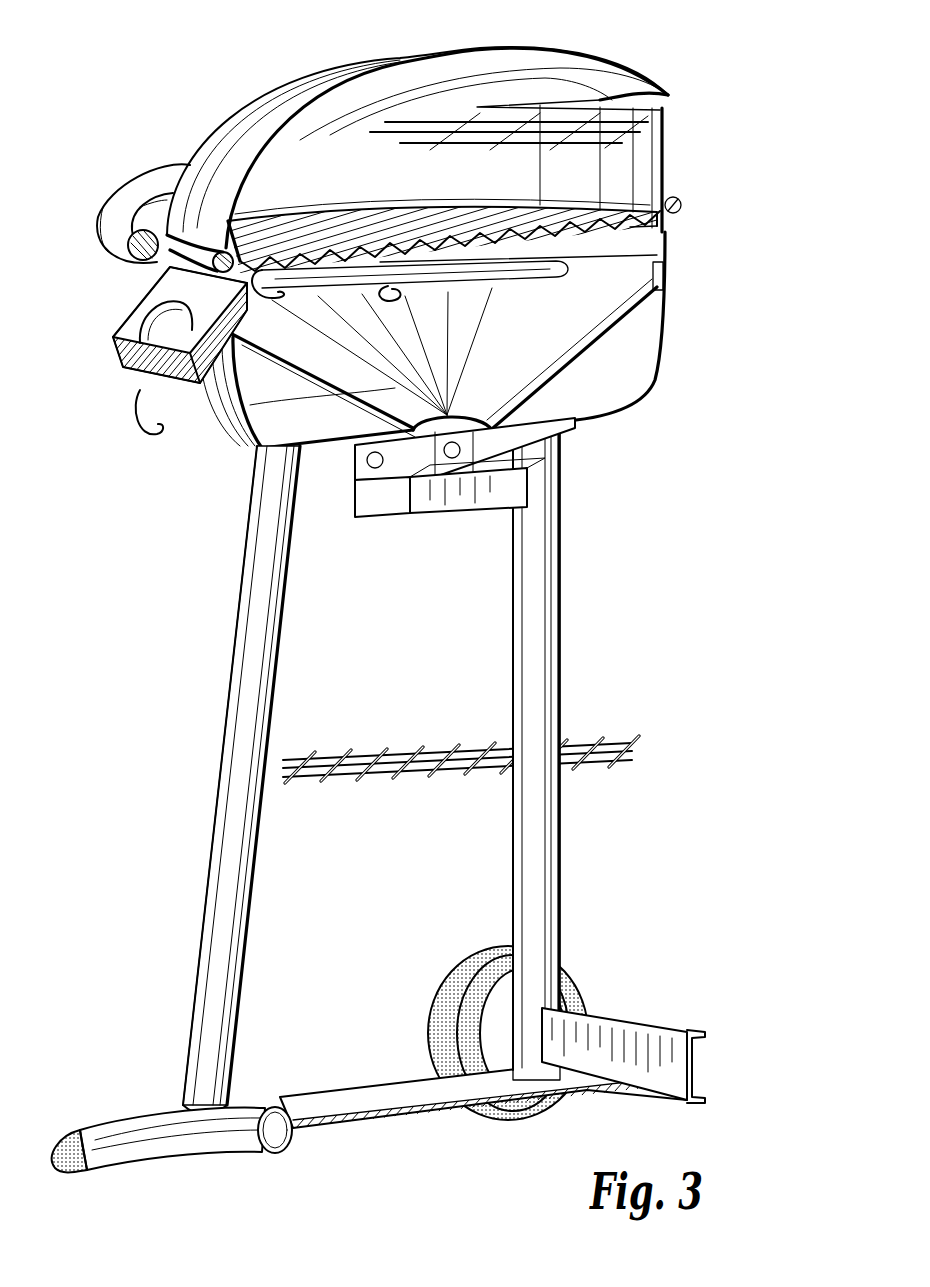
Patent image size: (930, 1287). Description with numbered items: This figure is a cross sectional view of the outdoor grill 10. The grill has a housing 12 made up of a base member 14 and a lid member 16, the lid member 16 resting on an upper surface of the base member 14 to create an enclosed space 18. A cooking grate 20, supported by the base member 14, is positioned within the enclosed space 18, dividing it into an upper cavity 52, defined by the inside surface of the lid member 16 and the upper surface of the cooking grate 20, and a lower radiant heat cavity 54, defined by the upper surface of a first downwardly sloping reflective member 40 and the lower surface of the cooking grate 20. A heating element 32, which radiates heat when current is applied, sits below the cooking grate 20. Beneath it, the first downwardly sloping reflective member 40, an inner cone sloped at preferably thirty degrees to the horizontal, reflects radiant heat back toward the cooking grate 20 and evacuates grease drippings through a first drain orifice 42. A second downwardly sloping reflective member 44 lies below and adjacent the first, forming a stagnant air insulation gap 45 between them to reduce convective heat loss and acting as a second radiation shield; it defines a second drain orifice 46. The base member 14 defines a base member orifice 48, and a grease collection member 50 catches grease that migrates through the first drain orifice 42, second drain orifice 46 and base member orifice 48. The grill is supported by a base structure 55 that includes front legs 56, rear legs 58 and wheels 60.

The outdoor grill 10 is at (707, 108).
The housing 12 is at (167, 133).
The base member 14 is at (425, 403).
The lid member 16 is at (287, 98).
The enclosed space 18 is at (450, 282).
The cooking grate 20 is at (630, 227).
The heating element 32 is at (513, 283).
The first downwardly sloping reflective member 40 is at (607, 317).
The first drain orifice 42 is at (513, 430).
The second downwardly sloping reflective member 44 is at (600, 347).
The stagnant air insulation gap 45 is at (358, 400).
The second drain orifice 46 is at (457, 428).
The base member orifice 48 is at (437, 430).
The grease collection member 50 is at (450, 508).
The upper cavity 52 is at (357, 175).
The lower radiant heat cavity 54 is at (432, 354).
The base structure 55 is at (378, 800).
The front legs 56 is at (210, 920).
The rear legs 58 is at (552, 808).
The wheels 60 is at (460, 963).